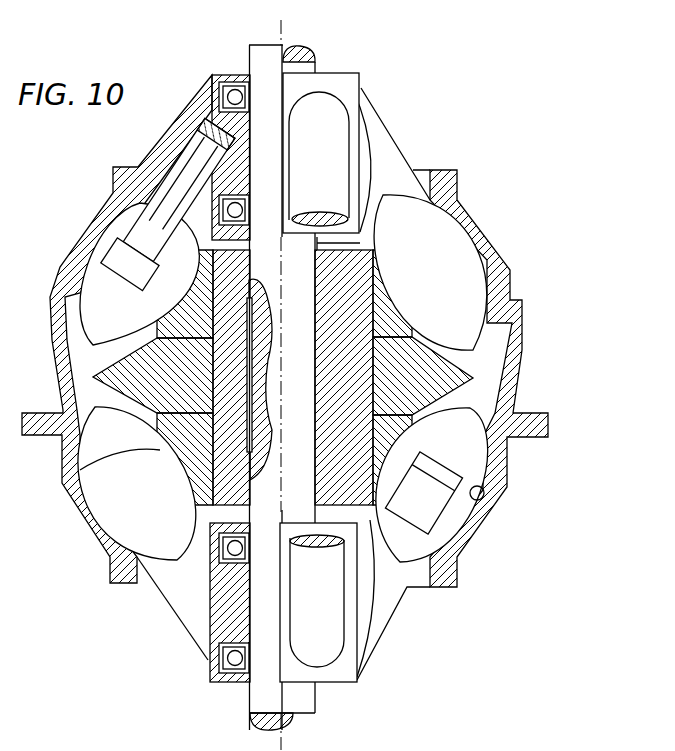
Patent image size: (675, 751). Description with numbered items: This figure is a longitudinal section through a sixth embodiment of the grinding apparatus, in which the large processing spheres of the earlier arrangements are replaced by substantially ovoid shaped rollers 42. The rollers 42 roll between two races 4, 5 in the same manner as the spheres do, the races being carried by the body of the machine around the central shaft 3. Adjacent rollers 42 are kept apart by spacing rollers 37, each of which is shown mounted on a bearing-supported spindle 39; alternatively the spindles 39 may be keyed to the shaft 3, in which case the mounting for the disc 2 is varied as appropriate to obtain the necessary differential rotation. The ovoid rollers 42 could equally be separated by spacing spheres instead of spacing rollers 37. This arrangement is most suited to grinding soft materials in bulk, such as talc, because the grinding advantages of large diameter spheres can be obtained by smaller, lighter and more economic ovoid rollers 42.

The disc 2 is at (108, 380).
The shaft 3 is at (310, 63).
The race 4 is at (80, 468).
The race 5 is at (477, 490).
The spacing roller 37 is at (117, 268).
The spindle 39 is at (360, 73).
The ovoid roller 42 is at (470, 262).